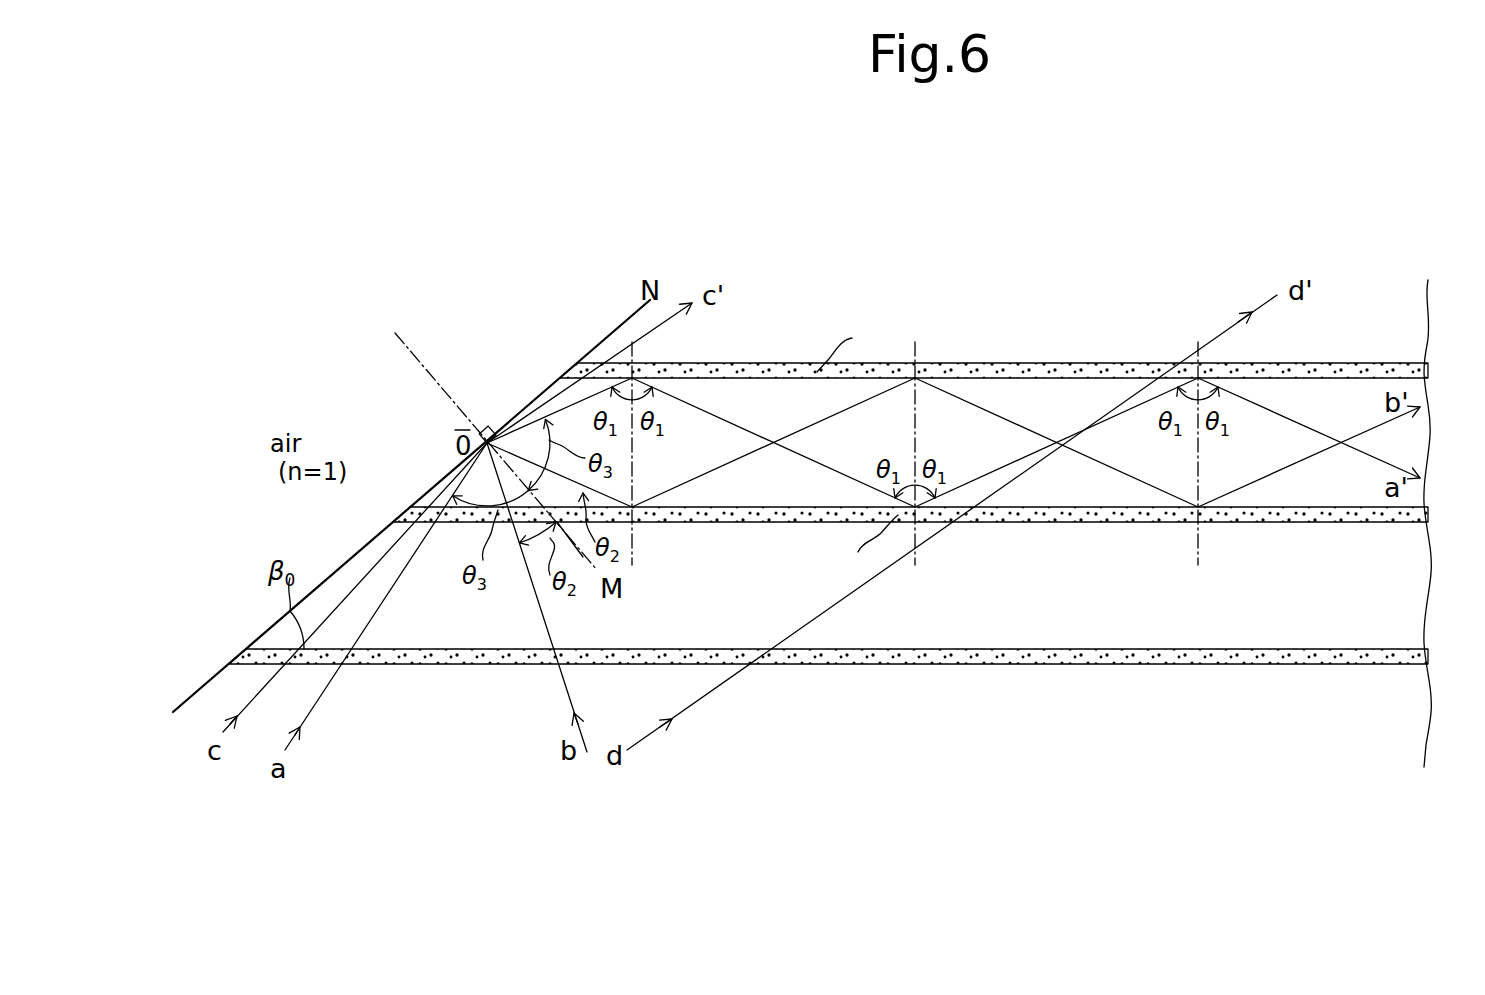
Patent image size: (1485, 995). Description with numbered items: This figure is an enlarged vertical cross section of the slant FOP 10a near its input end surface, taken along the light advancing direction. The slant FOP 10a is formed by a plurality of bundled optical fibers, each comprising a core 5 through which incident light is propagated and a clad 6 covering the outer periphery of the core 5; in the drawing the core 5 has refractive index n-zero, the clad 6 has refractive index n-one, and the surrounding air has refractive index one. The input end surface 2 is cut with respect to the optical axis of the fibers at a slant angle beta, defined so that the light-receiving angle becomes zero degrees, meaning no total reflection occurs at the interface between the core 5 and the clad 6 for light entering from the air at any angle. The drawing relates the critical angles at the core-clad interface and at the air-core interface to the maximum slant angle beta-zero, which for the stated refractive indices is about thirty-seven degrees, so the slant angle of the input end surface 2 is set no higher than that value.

The input end surface 2 is at (563, 376).
The core 5 is at (1403, 326).
The clad 6 is at (1404, 372).
The slant FOP 10a is at (1277, 227).